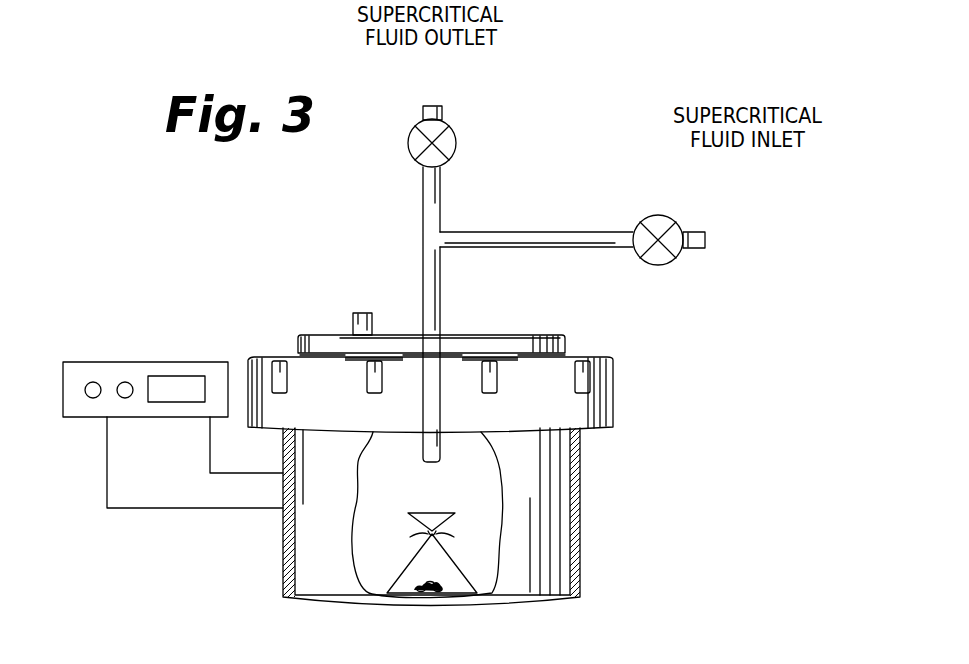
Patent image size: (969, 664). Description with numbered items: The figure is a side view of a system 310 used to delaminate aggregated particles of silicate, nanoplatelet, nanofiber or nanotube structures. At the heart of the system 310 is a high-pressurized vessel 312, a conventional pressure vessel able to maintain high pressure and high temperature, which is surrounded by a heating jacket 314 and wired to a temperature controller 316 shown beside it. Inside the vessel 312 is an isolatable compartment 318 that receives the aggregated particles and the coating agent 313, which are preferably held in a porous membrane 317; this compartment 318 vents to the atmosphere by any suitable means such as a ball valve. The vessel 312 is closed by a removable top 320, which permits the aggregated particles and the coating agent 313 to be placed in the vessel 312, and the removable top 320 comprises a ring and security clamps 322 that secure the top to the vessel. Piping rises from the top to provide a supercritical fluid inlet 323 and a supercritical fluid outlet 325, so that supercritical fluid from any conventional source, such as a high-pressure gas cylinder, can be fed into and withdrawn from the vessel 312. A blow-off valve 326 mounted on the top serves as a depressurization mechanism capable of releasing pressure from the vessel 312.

The system 310 is at (132, 216).
The high-pressurized vessel 312 is at (594, 481).
The coating agent 313 is at (433, 585).
The heating jacket 314 is at (581, 525).
The temperature controller 316 is at (128, 360).
The porous membrane 317 is at (416, 570).
The isolatable compartment 318 is at (377, 530).
The removable top 320 is at (615, 397).
The ring and security clamps 322 is at (277, 360).
The supercritical fluid inlet 323 is at (720, 238).
The supercritical fluid outlet 325 is at (433, 104).
The blow-off valve 326 is at (359, 312).